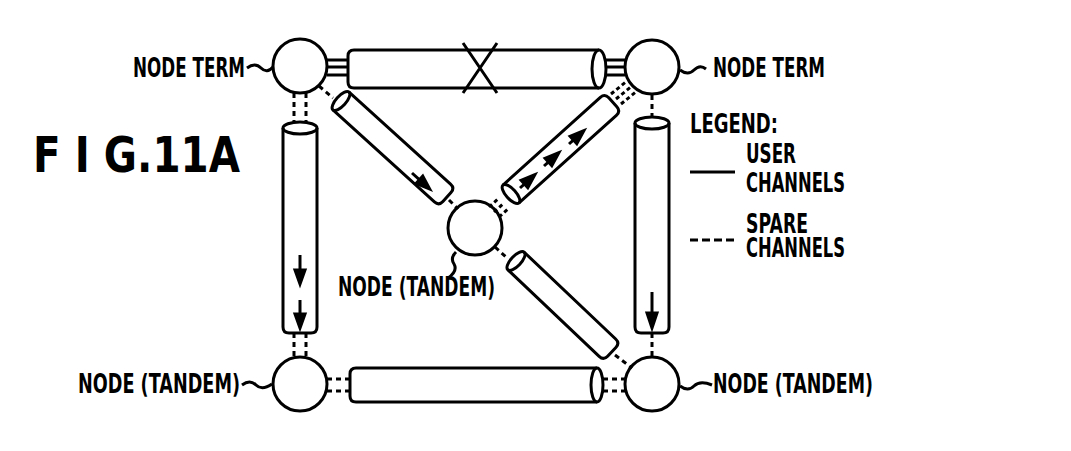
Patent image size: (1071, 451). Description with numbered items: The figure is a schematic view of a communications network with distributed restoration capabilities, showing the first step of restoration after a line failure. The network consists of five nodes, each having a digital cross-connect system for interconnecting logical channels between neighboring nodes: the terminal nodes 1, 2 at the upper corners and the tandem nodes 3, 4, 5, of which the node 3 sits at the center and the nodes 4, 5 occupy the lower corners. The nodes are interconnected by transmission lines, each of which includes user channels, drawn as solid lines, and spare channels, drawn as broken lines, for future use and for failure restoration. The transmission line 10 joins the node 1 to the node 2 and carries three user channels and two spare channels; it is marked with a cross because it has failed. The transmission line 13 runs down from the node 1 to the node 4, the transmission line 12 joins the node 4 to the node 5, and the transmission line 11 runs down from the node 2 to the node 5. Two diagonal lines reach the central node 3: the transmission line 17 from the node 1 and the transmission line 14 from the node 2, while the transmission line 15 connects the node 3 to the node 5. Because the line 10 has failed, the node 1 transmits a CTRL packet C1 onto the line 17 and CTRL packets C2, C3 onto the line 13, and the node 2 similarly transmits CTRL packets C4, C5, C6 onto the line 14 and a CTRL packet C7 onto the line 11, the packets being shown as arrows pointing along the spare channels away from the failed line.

The node 1 is at (300, 66).
The node 2 is at (652, 67).
The node 3 is at (475, 228).
The node 4 is at (300, 384).
The node 5 is at (652, 384).
The transmission line 10 is at (402, 50).
The transmission line 11 is at (634, 281).
The transmission line 12 is at (428, 402).
The transmission line 13 is at (283, 220).
The transmission line 14 is at (533, 160).
The transmission line 15 is at (548, 310).
The transmission line 17 is at (398, 137).
The CTRL packet C1 is at (412, 173).
The CTRL packet C2 is at (300, 300).
The CTRL packet C3 is at (300, 253).
The CTRL packet C4 is at (531, 196).
The CTRL packet C5 is at (556, 170).
The CTRL packet C6 is at (580, 150).
The CTRL packet C7 is at (654, 296).